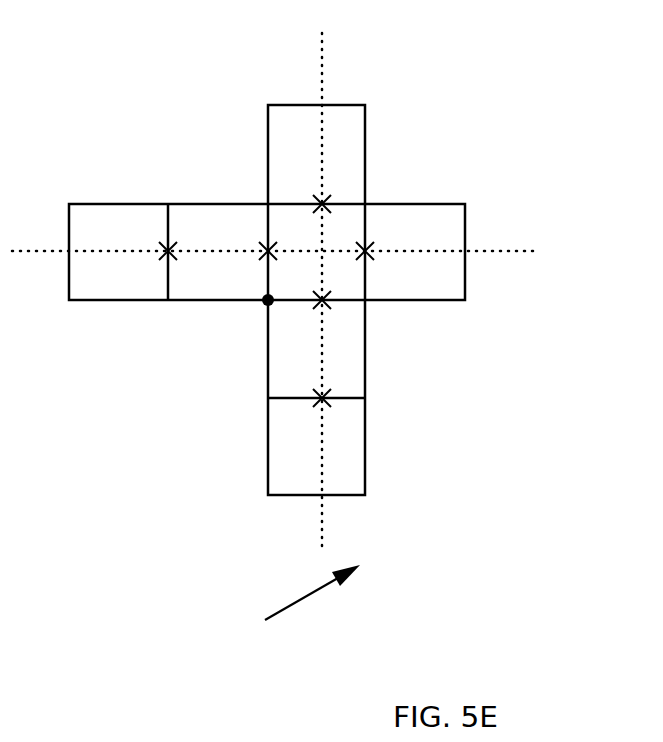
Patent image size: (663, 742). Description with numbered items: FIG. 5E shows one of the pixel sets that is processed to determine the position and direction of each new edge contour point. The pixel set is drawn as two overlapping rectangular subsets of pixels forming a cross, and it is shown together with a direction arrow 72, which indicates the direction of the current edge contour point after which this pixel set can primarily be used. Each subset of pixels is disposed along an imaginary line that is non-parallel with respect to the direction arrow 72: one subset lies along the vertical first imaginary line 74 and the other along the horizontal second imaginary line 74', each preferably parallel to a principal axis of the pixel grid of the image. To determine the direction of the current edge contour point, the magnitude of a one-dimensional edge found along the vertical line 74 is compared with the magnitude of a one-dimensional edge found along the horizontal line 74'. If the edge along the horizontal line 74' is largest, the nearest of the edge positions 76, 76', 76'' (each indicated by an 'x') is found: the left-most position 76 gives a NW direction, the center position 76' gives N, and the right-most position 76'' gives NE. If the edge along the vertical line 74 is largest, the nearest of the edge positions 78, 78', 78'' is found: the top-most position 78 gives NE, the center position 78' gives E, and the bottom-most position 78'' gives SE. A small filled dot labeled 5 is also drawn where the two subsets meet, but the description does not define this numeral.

The point 5 is at (265, 302).
The direction arrow 72 is at (293, 603).
The first imaginary line 74 is at (364, 291).
The second imaginary line 74' is at (291, 222).
The edge position 76 is at (139, 202).
The edge position 76' is at (239, 202).
The edge position 76'' is at (432, 201).
The edge position 78 is at (395, 134).
The edge position 78' is at (403, 347).
The edge position 78'' is at (399, 444).